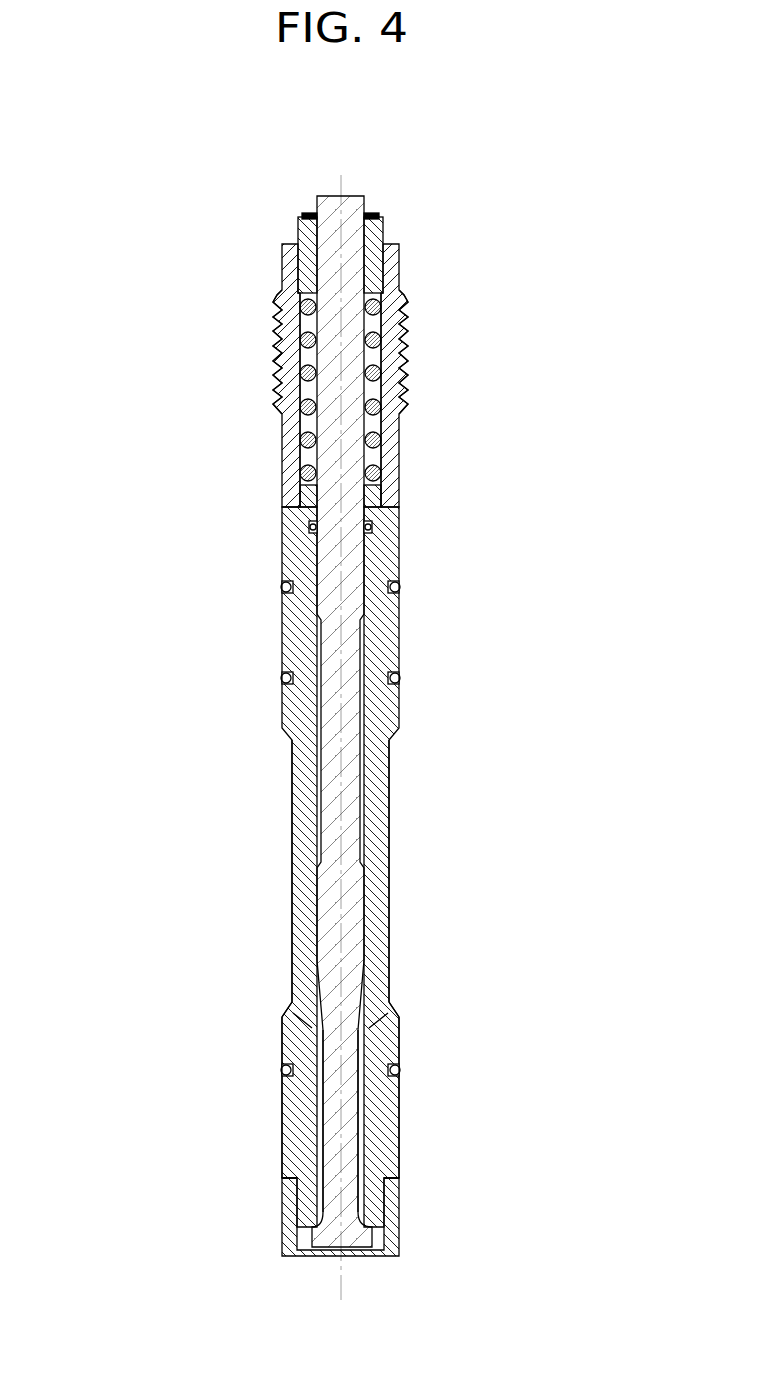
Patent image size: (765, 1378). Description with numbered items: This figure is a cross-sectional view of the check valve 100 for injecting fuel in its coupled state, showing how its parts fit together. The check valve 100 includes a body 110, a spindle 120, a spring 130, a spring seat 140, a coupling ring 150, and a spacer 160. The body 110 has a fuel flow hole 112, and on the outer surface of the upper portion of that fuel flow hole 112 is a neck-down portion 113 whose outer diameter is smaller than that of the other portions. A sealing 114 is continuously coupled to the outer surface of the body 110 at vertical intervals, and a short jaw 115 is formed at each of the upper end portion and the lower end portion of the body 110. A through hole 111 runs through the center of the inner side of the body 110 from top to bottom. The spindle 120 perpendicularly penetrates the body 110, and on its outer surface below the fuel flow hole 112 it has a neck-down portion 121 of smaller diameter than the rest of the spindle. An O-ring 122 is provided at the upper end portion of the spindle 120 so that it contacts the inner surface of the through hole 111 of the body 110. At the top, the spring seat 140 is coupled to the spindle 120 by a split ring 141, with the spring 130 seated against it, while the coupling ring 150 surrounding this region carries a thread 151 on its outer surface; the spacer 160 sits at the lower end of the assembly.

The check valve 100 is at (172, 793).
The body 110 is at (408, 1145).
The through hole 111 is at (322, 1130).
The fuel flow hole 112 is at (290, 1003).
The neck-down portion 113 is at (300, 866).
The sealing 114 is at (394, 677).
The short jaw 115 is at (298, 496).
The spindle 120 is at (360, 772).
The neck-down portion 121 is at (358, 1100).
The O-ring 122 is at (374, 527).
The spring 130 is at (386, 358).
The spring seat 140 is at (390, 266).
The split ring 141 is at (392, 214).
The coupling ring 150 is at (273, 331).
The thread 151 is at (278, 363).
The spacer 160 is at (408, 1200).